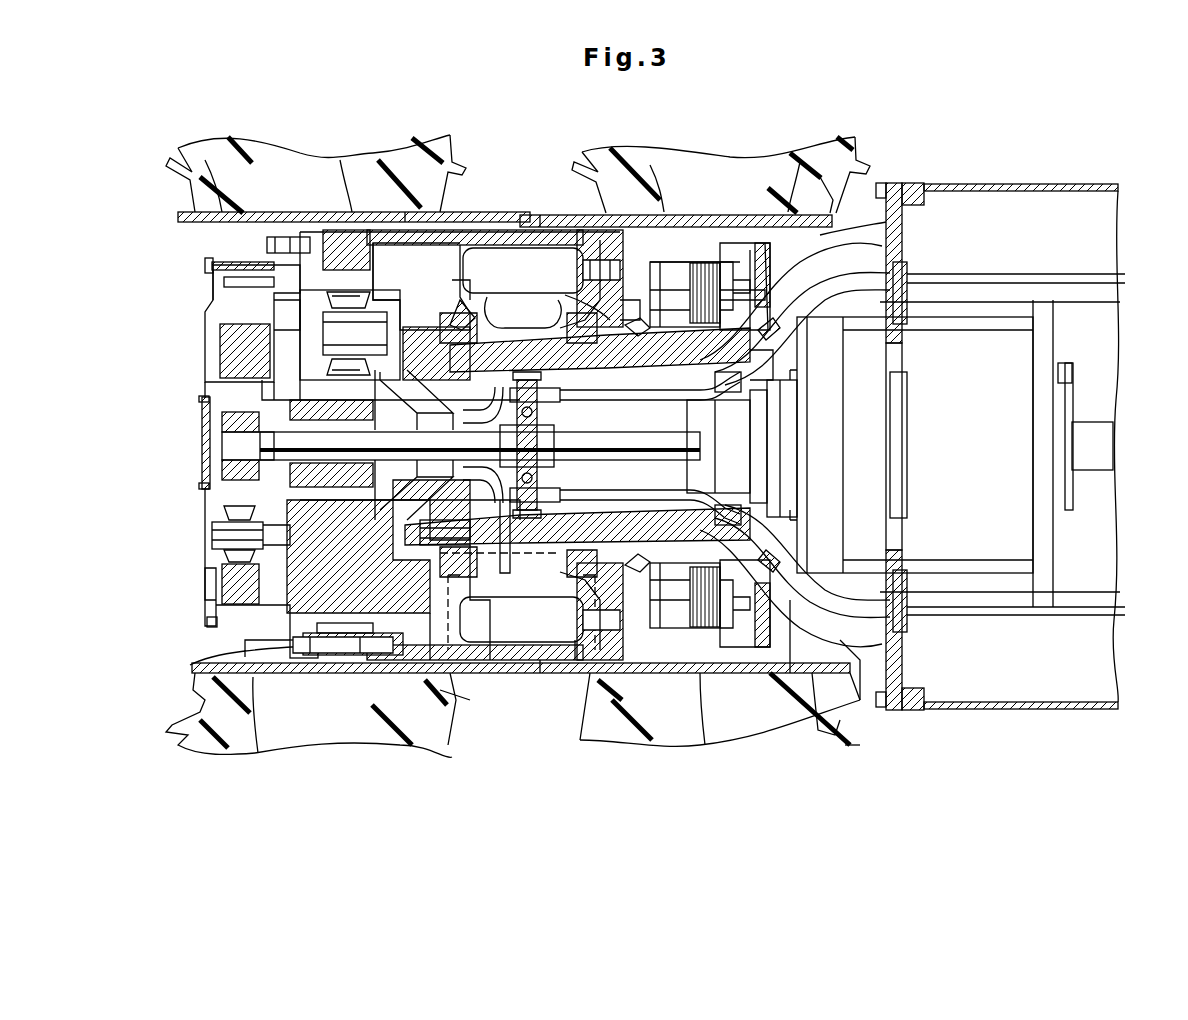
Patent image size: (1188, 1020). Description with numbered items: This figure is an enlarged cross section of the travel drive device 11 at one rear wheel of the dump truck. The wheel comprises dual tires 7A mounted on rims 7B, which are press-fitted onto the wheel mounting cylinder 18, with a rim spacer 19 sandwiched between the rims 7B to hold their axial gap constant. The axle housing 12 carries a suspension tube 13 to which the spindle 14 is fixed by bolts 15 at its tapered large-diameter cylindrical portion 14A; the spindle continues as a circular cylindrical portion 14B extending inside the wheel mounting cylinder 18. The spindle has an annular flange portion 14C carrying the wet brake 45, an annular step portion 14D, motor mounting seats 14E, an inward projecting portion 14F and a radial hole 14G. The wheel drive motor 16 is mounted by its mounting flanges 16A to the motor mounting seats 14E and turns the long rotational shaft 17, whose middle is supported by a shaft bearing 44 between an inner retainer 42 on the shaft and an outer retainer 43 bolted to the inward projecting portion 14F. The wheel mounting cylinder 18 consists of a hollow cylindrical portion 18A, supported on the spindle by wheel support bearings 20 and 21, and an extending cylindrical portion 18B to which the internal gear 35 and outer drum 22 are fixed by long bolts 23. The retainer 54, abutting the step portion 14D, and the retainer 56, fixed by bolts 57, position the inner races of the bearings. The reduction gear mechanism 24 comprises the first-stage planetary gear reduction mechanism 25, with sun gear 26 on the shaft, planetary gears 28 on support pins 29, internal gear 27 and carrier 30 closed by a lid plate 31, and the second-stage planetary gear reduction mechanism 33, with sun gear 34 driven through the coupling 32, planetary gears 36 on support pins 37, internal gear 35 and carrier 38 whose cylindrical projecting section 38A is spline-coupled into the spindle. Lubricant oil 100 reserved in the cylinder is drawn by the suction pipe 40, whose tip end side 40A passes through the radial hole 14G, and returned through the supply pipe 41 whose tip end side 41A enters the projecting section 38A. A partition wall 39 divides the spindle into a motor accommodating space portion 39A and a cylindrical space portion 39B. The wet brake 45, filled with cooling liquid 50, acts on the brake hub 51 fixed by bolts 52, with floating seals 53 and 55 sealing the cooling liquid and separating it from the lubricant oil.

The tire 7A is at (226, 185).
The rim 7B is at (255, 685).
The travel drive device 11 is at (527, 205).
The axle housing 12 is at (1005, 175).
The suspension tube 13 is at (1068, 184).
The spindle 14 is at (797, 258).
The large-diameter cylindrical portion 14A is at (826, 233).
The circular cylindrical portion 14B is at (500, 330).
The annular flange portion 14C is at (752, 250).
The annular step portion 14D is at (650, 396).
The motor mounting seat 14E is at (893, 318).
The inward projecting portion 14F is at (595, 265).
The radial hole 14G is at (518, 555).
The bolt 15 is at (889, 183).
The wheel drive motor 16 is at (1015, 357).
The mounting flange 16A is at (907, 340).
The rotational shaft 17 is at (650, 447).
The wheel mounting cylinder 18 is at (452, 240).
The hollow cylindrical portion 18A is at (542, 240).
The extending cylindrical portion 18B is at (405, 214).
The rim spacer 19 is at (550, 675).
The wheel support bearing 20 is at (575, 660).
The wheel support bearing 21 is at (485, 620).
The outer drum 22 is at (270, 245).
The long bolt 23 is at (346, 655).
The reduction gear mechanism 24 is at (232, 658).
The first-stage planetary gear reduction mechanism 25 is at (212, 569).
The sun gear 26 is at (235, 428).
The internal gear 27 is at (225, 282).
The planetary gear 28 is at (232, 592).
The support pin 29 is at (230, 533).
The carrier 30 is at (240, 352).
The lid plate 31 is at (205, 450).
The coupling 32 is at (275, 325).
The second-stage planetary gear reduction mechanism 33 is at (250, 345).
The sun gear 34 is at (285, 405).
The internal gear 35 is at (333, 290).
The planetary gear 36 is at (345, 312).
The support pin 37 is at (300, 300).
The carrier 38 is at (332, 600).
The cylindrical projecting section 38A is at (410, 600).
The partition wall 39 is at (795, 640).
The motor accommodating space portion 39A is at (848, 760).
The cylindrical space portion 39B is at (750, 647).
The suction pipe 40 is at (838, 668).
The tip end side 40A is at (500, 595).
The supply pipe 41 is at (775, 235).
The tip end side 41A is at (462, 300).
The inner retainer 42 is at (540, 480).
The outer retainer 43 is at (520, 372).
The shaft bearing 44 is at (535, 410).
The wet brake 45 is at (716, 235).
The cooling liquid 50 is at (690, 265).
The brake hub 51 is at (700, 628).
The bolt 52 is at (602, 240).
The floating seal 53 is at (673, 250).
The retainer 54 is at (622, 315).
The floating seal 55 is at (650, 628).
The retainer 56 is at (438, 355).
The bolt 57 is at (430, 545).
The lubricant oil 100 is at (230, 512).